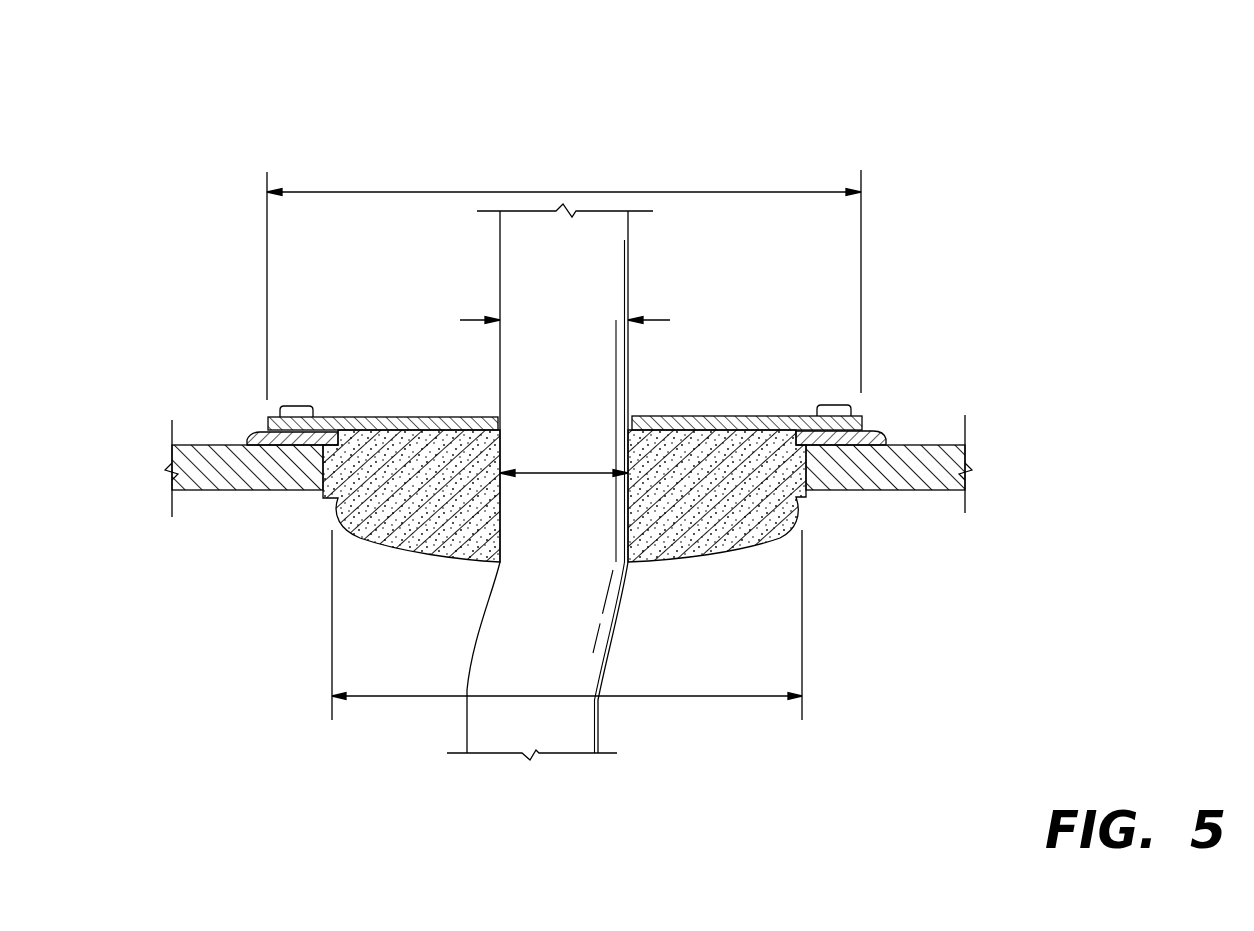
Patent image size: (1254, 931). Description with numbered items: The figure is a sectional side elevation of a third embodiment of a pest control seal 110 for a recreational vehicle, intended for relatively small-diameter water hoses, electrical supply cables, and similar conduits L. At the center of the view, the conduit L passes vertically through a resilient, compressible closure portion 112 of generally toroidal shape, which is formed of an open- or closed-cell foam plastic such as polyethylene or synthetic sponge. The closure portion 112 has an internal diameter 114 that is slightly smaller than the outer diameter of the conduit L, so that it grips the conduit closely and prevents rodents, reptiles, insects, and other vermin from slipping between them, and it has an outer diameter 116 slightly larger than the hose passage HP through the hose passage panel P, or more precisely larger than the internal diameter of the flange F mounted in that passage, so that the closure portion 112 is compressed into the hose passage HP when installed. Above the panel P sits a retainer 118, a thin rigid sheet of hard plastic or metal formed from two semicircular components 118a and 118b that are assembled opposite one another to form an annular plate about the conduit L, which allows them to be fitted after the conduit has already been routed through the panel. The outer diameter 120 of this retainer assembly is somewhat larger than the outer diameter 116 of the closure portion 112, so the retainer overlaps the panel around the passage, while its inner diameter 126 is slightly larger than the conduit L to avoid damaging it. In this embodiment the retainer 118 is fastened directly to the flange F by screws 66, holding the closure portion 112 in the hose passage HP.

The pest control seal 110 is at (1013, 108).
The closure portion 112 is at (468, 563).
The internal diameter 114 is at (578, 474).
The outer diameter 116 is at (528, 697).
The retainer 118 is at (653, 413).
The semicircular retainer component 118a is at (393, 416).
The semicircular retainer component 118b is at (728, 415).
The outer diameter of the retainer assembly 120 is at (742, 192).
The inner diameter of the retainer 126 is at (589, 319).
The screws 66 is at (298, 406).
The hose passage panel P is at (252, 490).
The flange F is at (248, 432).
The hose passage HP is at (338, 477).
The conduit L is at (542, 274).